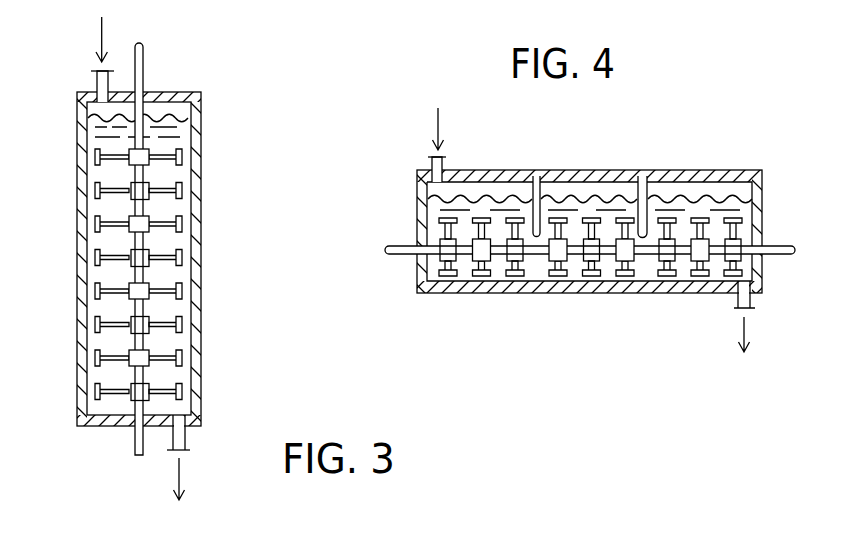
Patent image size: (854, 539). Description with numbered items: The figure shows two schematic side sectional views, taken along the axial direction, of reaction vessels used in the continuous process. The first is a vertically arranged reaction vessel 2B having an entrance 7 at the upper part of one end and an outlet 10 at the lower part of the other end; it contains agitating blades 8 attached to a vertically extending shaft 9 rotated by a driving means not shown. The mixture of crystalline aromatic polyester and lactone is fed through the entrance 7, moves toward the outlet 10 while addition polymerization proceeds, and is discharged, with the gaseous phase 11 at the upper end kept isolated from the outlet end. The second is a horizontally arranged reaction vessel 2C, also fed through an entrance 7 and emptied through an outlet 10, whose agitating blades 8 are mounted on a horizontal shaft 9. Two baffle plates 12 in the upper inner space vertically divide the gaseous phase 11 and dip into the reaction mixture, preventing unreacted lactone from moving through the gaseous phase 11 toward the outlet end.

In FIG. 3, the reaction vessel 2B is at (200, 232).
In FIG. 4, the reaction vessel 2C is at (577, 182).
In FIG. 3, the entrance 7 is at (95, 78).
In FIG. 4, the entrance 7 is at (428, 158).
In FIG. 3, the agitating blades 8 is at (178, 190).
In FIG. 4, the agitating blades 8 is at (450, 277).
In FIG. 3, the shaft 9 is at (138, 75).
In FIG. 4, the shaft 9 is at (397, 245).
In FIG. 3, the outlet 10 is at (188, 440).
In FIG. 4, the outlet 10 is at (733, 301).
In FIG. 3, the gaseous phase 11 is at (186, 111).
In FIG. 4, the gaseous phase 11 is at (490, 190).
In FIG. 4, the baffle plates 12 is at (643, 200).